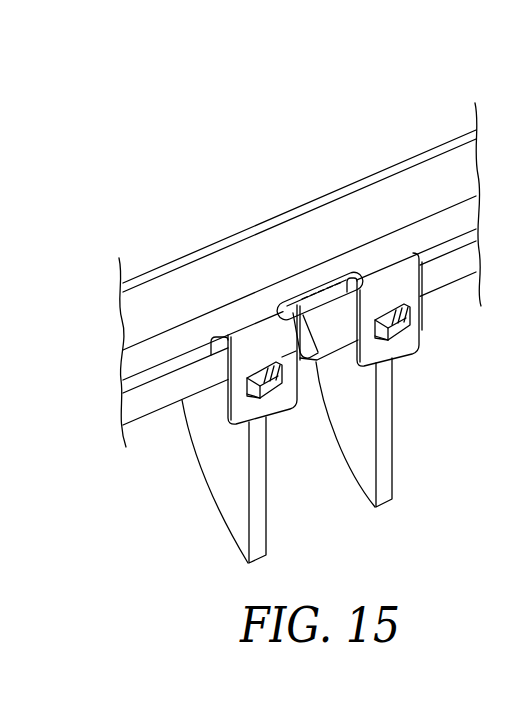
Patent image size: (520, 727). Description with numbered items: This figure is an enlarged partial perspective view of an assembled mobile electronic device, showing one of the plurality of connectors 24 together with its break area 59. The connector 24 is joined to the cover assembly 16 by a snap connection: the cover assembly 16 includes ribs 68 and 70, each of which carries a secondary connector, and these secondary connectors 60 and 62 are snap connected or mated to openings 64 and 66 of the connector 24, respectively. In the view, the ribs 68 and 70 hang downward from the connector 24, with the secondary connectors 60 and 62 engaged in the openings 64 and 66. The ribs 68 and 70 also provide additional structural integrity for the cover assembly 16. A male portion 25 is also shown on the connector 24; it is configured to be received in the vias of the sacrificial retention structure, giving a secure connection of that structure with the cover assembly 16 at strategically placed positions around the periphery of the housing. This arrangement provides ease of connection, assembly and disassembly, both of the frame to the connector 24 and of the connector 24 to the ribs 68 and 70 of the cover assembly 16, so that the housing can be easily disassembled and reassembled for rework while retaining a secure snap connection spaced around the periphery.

The cover assembly 16 is at (404, 560).
The connector 24 is at (270, 322).
The male portion 25 is at (335, 340).
The break area 59 is at (300, 272).
The secondary connector 60 is at (270, 387).
The secondary connector 62 is at (395, 334).
The opening 64 is at (257, 391).
The opening 66 is at (400, 337).
The rib 68 is at (260, 525).
The rib 70 is at (385, 446).